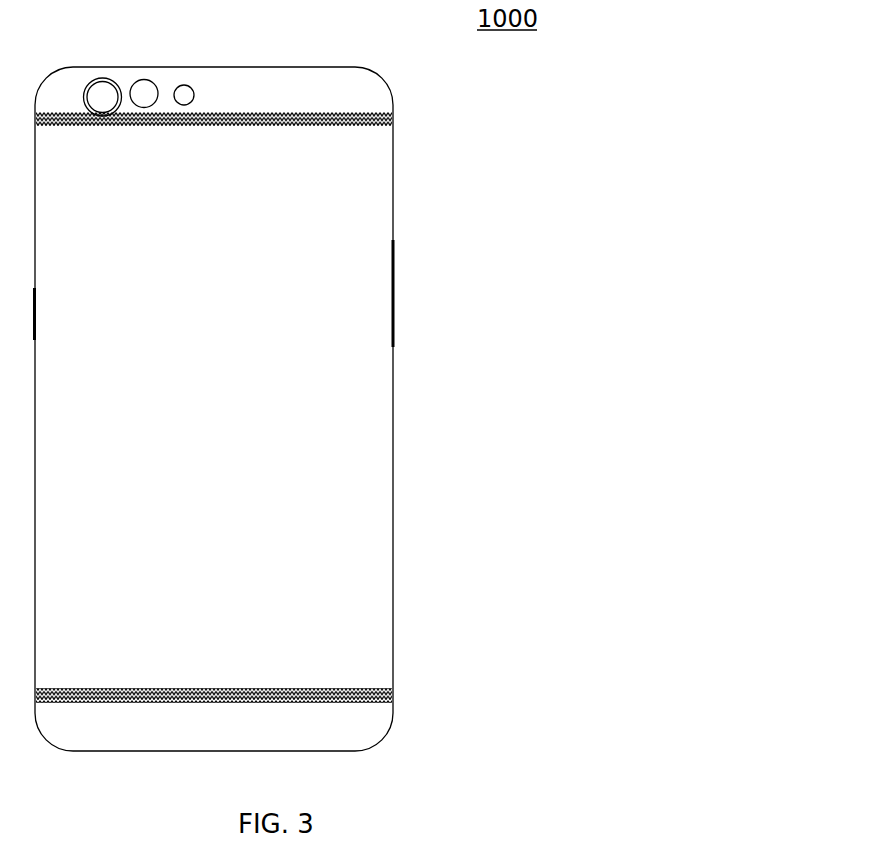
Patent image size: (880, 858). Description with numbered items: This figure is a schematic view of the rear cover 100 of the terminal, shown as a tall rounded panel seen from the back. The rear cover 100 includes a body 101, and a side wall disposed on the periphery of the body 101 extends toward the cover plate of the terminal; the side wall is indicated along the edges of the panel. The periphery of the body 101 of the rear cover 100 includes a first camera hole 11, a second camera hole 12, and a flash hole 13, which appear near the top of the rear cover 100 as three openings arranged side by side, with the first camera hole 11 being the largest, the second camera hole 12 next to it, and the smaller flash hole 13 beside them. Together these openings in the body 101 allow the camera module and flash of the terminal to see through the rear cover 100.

The rear cover 100 is at (393, 162).
The body 101 is at (370, 310).
The first camera hole 11 is at (99, 79).
The second camera hole 12 is at (146, 80).
The flash hole 13 is at (185, 85).